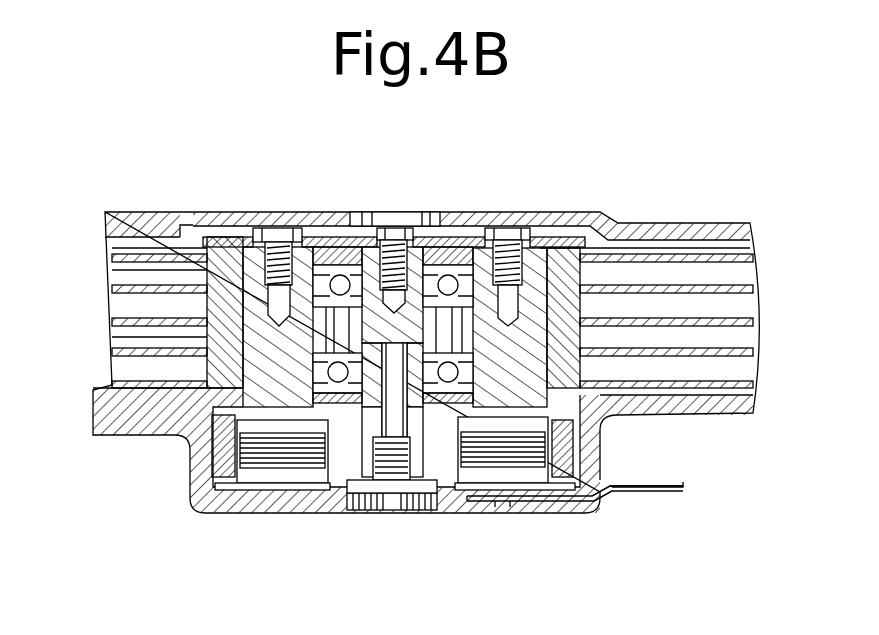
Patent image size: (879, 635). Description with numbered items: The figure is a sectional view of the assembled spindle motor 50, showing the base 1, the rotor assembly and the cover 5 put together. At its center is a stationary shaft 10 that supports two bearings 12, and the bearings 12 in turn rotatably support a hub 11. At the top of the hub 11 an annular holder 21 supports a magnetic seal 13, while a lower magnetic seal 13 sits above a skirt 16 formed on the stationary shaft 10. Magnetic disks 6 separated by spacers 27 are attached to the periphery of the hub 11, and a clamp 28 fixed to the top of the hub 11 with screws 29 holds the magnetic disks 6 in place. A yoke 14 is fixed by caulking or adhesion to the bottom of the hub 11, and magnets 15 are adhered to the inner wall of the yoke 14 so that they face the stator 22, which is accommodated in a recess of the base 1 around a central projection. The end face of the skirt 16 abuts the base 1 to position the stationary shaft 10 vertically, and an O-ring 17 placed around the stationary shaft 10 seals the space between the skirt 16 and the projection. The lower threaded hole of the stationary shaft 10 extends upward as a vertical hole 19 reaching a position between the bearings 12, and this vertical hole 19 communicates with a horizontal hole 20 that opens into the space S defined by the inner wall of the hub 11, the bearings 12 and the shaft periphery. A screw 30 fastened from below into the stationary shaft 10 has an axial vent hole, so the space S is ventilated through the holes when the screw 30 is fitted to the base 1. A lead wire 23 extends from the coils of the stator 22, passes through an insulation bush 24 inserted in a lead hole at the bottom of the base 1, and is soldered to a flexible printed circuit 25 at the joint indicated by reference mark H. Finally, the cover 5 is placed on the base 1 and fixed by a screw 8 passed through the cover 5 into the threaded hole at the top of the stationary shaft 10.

The base 1 is at (700, 408).
The cover 5 is at (708, 223).
The magnetic disks 6 is at (142, 285).
The space S is at (140, 340).
The screw 8 is at (393, 218).
The stationary shaft 10 is at (423, 240).
The hub 11 is at (240, 395).
The bearings 12 is at (605, 423).
The magnetic seal 13 is at (355, 213).
The yoke 14 is at (573, 448).
The magnets 15 is at (603, 490).
The skirt 16 is at (340, 440).
The O-ring 17 is at (375, 440).
The vertical hole 19 is at (440, 420).
The horizontal hole 20 is at (365, 420).
The annular holder 21 is at (322, 247).
The stator 22 is at (268, 458).
The lead wire 23 is at (560, 490).
The insulation bush 24 is at (483, 490).
The flexible printed circuit 25 is at (663, 490).
The spacers 27 is at (265, 383).
The clamp 28 is at (184, 228).
The screws 29 is at (275, 228).
The screw 30 is at (400, 510).
The spindle motor 50 is at (614, 187).
The soldered joint H is at (500, 502).